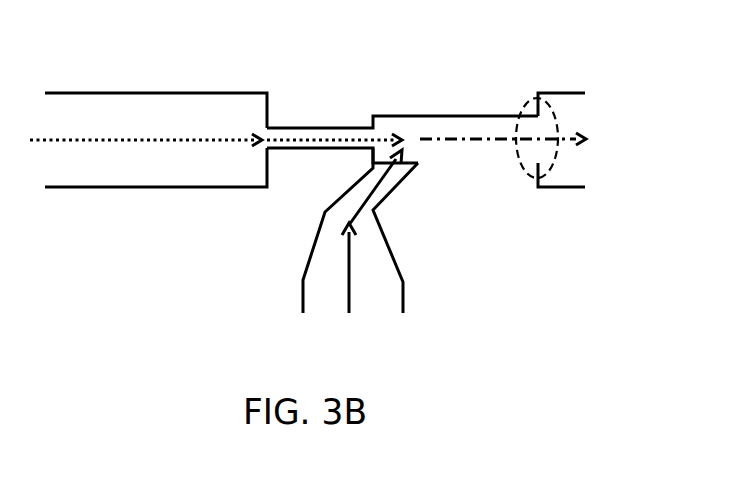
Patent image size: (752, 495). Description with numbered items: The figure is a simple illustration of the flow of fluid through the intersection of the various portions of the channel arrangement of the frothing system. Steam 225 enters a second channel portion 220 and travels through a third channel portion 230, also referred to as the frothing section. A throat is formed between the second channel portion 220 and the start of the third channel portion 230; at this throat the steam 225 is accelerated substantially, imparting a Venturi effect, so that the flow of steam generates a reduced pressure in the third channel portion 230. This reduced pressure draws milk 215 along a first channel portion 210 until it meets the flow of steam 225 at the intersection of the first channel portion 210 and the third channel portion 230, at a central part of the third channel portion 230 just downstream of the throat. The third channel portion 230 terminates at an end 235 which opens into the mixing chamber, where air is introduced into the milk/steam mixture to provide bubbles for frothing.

The first channel portion 210 is at (472, 210).
The milk 215 is at (348, 278).
The second channel portion 220 is at (45, 70).
The steam 225 is at (156, 142).
The third channel portion 230 is at (272, 70).
The end 235 is at (556, 115).